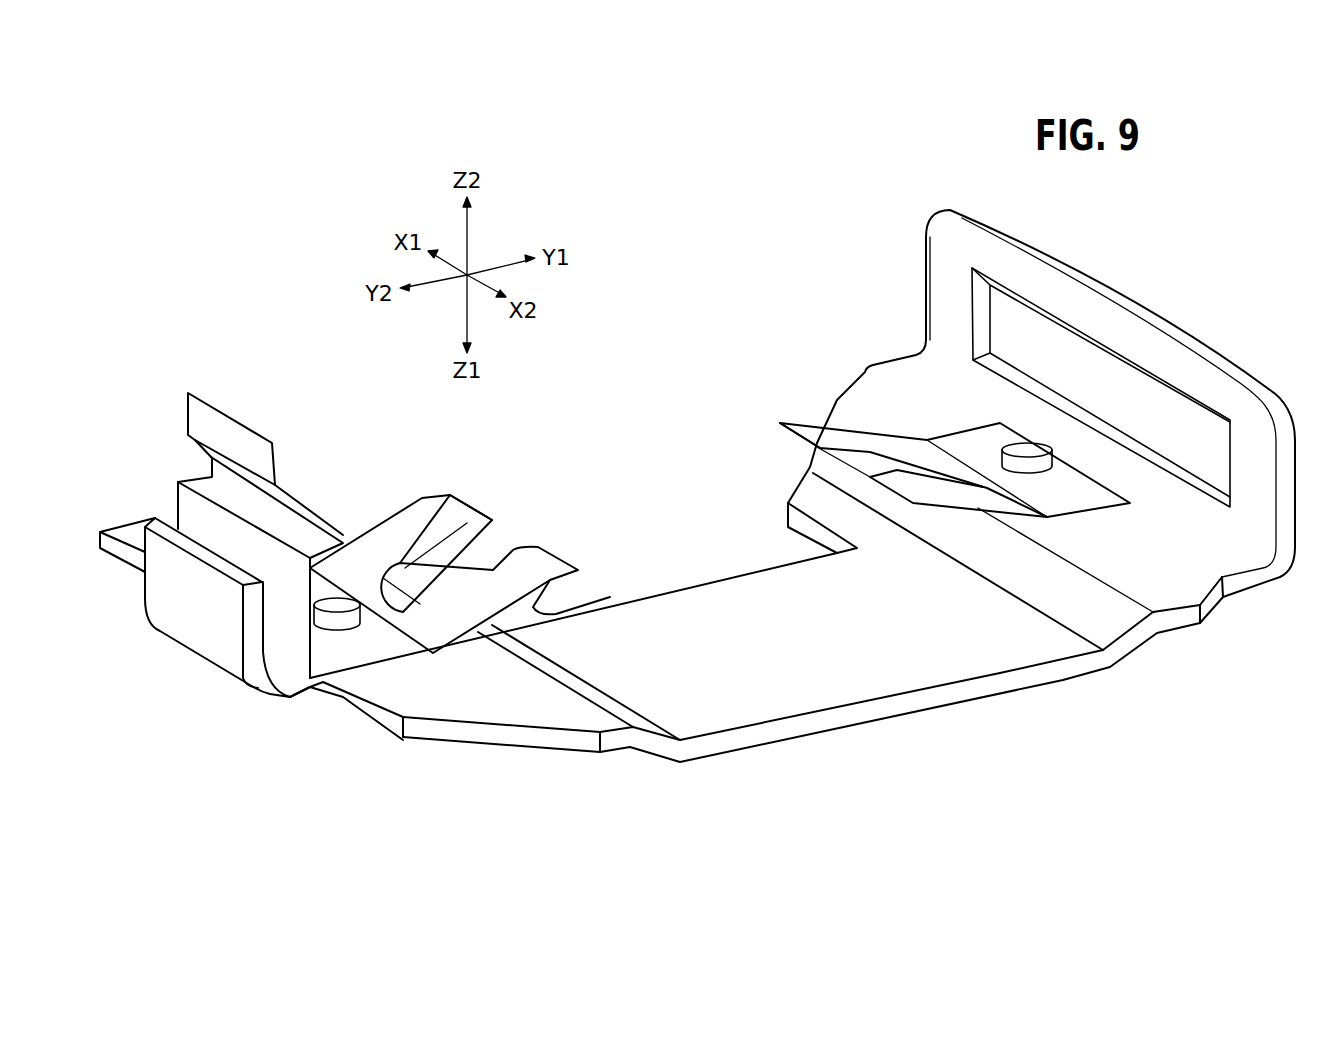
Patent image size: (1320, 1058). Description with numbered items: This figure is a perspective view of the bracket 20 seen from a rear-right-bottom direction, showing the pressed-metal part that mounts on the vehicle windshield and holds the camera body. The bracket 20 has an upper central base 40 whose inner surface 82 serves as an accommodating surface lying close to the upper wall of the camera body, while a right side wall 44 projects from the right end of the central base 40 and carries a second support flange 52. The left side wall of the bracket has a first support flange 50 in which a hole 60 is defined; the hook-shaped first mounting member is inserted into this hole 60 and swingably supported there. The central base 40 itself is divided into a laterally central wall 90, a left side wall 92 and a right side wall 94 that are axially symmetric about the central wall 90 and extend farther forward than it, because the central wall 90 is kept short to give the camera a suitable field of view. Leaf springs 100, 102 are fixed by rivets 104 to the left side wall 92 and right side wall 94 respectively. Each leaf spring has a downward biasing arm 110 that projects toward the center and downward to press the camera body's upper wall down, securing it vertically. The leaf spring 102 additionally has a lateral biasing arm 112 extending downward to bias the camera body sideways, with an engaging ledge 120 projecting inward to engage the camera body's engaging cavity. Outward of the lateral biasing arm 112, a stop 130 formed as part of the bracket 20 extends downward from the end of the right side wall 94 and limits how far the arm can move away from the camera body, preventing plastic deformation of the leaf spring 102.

The bracket 20 is at (748, 212).
The upper central base 40 is at (1010, 758).
The right side wall 44 is at (163, 595).
The first support flange 50 is at (1195, 339).
The second support flange 52 is at (223, 687).
The hole 60 is at (1063, 342).
The inner surface 82 is at (697, 607).
The central wall 90 is at (842, 692).
The left side wall 92 is at (1135, 577).
The right side wall 94 is at (550, 740).
The leaf spring 100 is at (963, 442).
The leaf spring 102 is at (375, 547).
The rivet 104 is at (338, 625).
The downward biasing arm 110 is at (803, 423).
The lateral biasing arm 112 is at (250, 448).
The engaging ledge 120 is at (297, 495).
The stop 130 is at (193, 628).